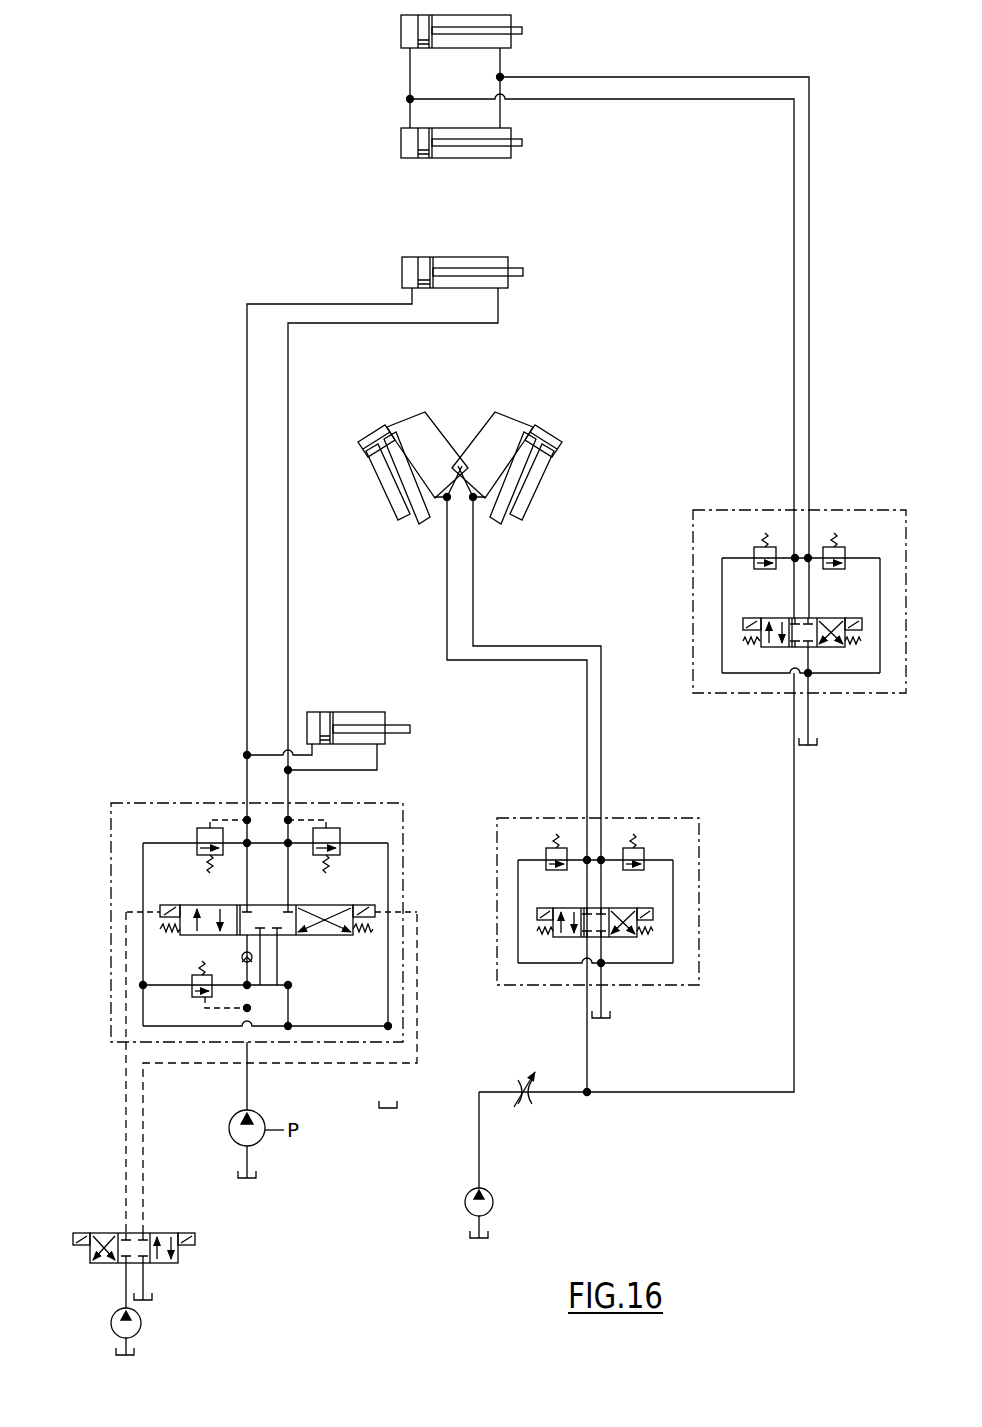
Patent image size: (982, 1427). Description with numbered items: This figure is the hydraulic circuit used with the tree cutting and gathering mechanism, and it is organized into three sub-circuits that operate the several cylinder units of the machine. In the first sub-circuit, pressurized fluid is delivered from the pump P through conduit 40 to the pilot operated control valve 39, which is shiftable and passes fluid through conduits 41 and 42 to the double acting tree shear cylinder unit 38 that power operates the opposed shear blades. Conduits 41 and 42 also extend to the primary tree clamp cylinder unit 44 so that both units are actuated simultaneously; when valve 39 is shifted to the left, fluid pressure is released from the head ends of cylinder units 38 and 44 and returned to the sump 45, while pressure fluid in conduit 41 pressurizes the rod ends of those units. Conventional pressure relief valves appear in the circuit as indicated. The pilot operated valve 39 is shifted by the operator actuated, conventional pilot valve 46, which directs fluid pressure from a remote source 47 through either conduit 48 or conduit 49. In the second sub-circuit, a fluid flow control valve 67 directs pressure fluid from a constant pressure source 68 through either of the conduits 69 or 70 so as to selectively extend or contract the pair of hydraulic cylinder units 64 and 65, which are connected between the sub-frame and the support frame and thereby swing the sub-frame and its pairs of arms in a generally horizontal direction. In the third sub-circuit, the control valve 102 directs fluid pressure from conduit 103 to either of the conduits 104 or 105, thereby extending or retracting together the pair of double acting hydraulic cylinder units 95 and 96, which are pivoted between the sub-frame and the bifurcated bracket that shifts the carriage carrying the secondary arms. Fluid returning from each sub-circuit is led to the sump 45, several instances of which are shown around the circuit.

The double acting hydraulic cylinder unit 95 is at (401, 36).
The double acting hydraulic cylinder unit 96 is at (401, 147).
The primary tree clamp cylinder unit 44 is at (474, 257).
The hydraulic cylinder unit 65 is at (375, 475).
The hydraulic cylinder unit 64 is at (536, 484).
The double acting cylinder unit 38 is at (340, 712).
The conduit 42 is at (247, 768).
The conduit 41 is at (288, 790).
The pilot operated control valve 39 is at (190, 935).
The conduit 40 is at (249, 1090).
The sump 45 is at (258, 1181).
The conduit 48 is at (122, 1131).
The conduit 49 is at (147, 1136).
The pilot valve 46 is at (102, 1232).
The remote source 47 is at (110, 1320).
The conduit 69 is at (587, 701).
The conduit 70 is at (602, 714).
The fluid flow control valve 67 is at (645, 893).
The constant pressure source 68 is at (495, 1204).
The control valve 102 is at (757, 608).
The conduit 103 is at (796, 880).
The conduit 104 is at (793, 390).
The conduit 105 is at (810, 398).